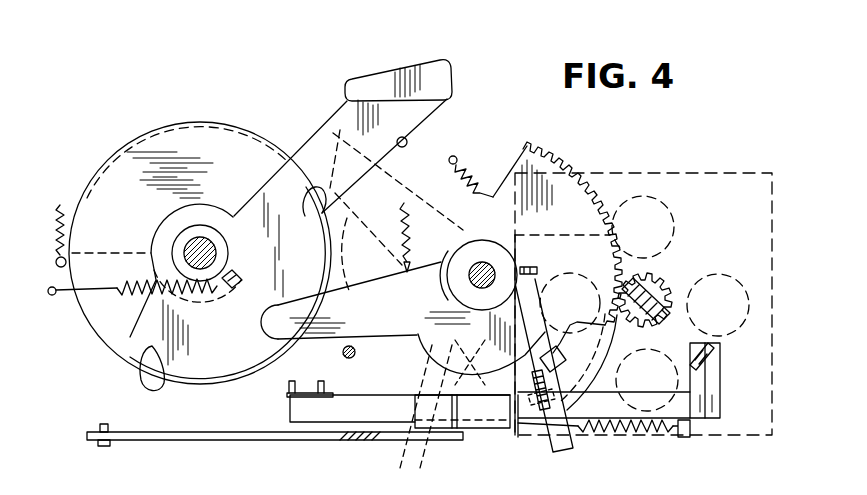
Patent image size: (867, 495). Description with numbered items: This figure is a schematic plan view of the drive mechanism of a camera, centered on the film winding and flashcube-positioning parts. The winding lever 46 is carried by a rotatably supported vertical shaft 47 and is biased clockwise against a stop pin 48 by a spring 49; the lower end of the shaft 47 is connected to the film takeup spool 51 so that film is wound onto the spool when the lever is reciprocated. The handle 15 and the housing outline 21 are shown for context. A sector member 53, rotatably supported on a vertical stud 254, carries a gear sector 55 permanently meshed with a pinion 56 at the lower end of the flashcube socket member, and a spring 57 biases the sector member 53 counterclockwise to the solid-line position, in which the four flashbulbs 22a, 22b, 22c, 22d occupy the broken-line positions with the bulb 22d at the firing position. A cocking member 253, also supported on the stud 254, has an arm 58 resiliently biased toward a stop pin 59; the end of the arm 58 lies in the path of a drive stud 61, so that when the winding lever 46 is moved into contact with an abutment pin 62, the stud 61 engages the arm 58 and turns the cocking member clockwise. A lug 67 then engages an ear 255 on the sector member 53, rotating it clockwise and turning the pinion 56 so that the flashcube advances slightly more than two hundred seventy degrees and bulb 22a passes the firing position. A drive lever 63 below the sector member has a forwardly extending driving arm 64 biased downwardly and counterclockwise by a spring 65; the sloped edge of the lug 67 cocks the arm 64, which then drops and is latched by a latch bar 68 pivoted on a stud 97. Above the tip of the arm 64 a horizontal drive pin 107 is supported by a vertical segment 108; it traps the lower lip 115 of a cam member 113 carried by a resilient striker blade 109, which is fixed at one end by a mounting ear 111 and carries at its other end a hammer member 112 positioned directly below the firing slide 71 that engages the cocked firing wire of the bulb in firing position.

The handle 15 is at (407, 70).
The housing frame 21 is at (680, 182).
The flashbulb 22a is at (735, 282).
The flashbulb 22b is at (666, 216).
The flashbulb 22c is at (592, 280).
The flashbulb 22d is at (664, 385).
The winding lever 46 is at (352, 118).
The vertical shaft 47 is at (213, 250).
The stop pin 48 is at (409, 141).
The spring 49 is at (141, 280).
The film takeup spool 51 is at (108, 328).
The sector member 53 is at (528, 148).
The gear sector 55 is at (571, 163).
The pinion 56 is at (656, 285).
The spring 57 is at (483, 192).
The arm 58 is at (403, 289).
The stop pin 59 is at (343, 354).
The drive stud 61 is at (308, 194).
The abutment pin 62 is at (56, 262).
The drive lever 63 is at (474, 362).
The driving arm 64 is at (565, 449).
The spring 65 is at (661, 438).
The lug 67 is at (552, 367).
The latch bar 68 is at (277, 442).
The firing slide 71 is at (722, 353).
The stud 97 is at (104, 448).
The drive pin 107 is at (415, 410).
The vertical segment 108 is at (432, 378).
The striker blade 109 is at (323, 412).
The mounting ear 111 is at (300, 398).
The hammer member 112 is at (722, 398).
The cam member 113 is at (470, 430).
The lower lip 115 is at (415, 420).
The cocking member 253 is at (428, 344).
The vertical stud 254 is at (480, 268).
The ear 255 is at (541, 412).